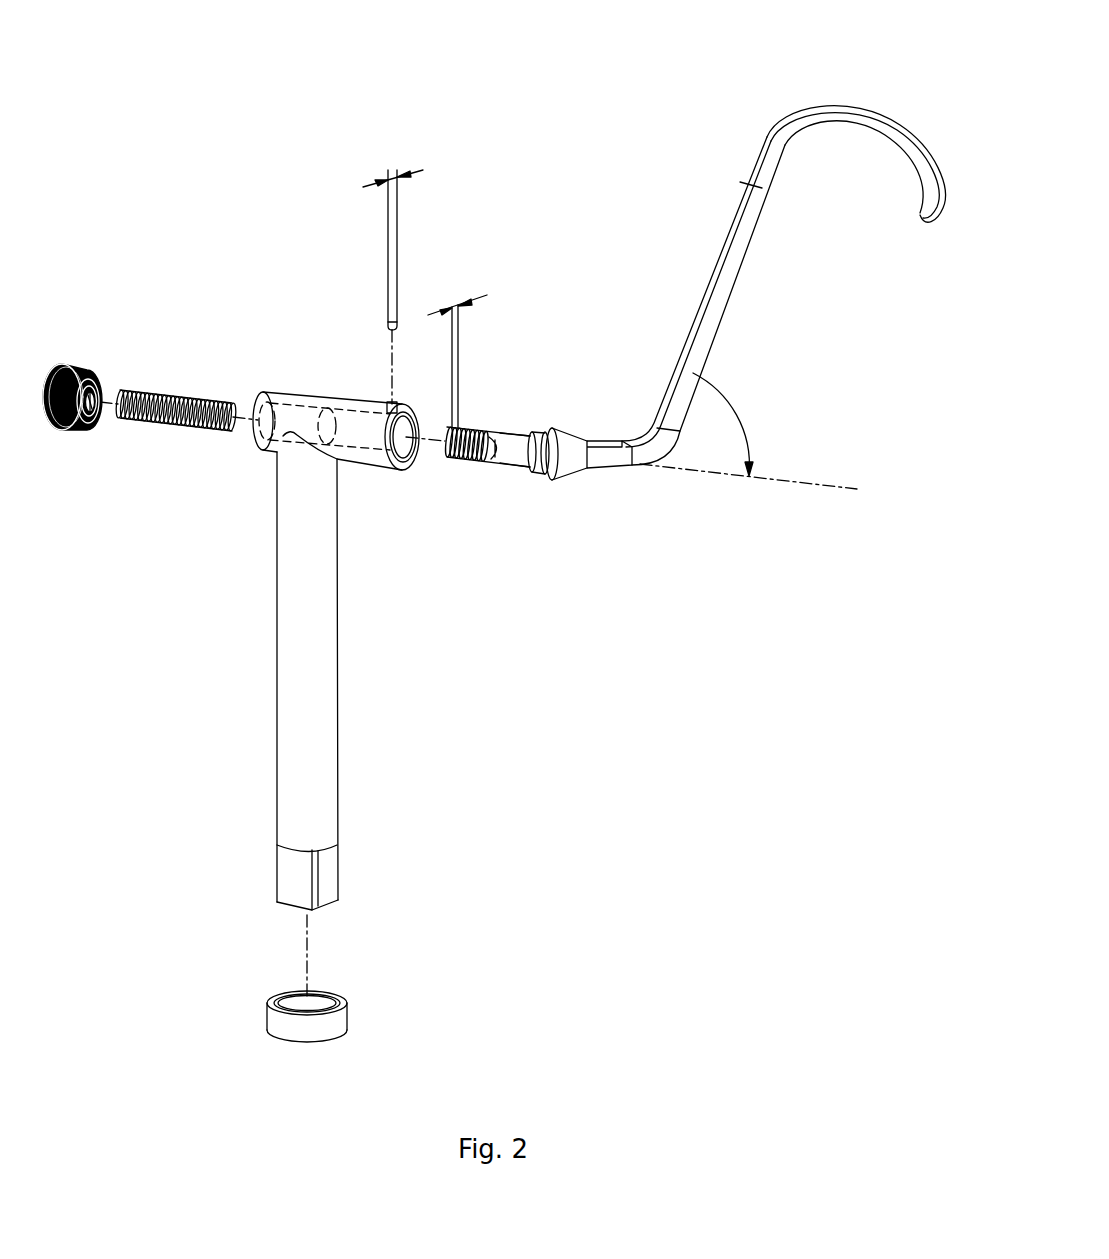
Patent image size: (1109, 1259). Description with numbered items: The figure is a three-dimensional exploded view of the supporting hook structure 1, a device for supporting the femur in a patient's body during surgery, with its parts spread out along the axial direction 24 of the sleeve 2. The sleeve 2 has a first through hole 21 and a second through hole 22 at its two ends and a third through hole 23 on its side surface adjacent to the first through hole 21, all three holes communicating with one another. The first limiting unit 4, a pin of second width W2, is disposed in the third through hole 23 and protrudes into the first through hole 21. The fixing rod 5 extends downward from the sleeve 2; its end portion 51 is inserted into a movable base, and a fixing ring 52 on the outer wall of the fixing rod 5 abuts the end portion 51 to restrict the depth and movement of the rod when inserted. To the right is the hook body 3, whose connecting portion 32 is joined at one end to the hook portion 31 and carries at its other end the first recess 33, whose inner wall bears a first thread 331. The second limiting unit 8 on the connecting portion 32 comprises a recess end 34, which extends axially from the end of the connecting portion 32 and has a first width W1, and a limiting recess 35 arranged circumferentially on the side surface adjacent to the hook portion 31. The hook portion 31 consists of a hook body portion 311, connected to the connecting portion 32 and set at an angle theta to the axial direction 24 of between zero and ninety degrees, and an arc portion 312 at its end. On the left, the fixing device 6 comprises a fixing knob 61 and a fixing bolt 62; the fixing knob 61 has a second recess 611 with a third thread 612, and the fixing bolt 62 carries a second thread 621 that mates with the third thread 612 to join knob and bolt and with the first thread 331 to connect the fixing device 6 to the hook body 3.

The supporting hook structure 1 is at (150, 88).
The sleeve 2 is at (316, 410).
The hook body 3 is at (627, 238).
The first limiting unit 4 is at (396, 322).
The fixing rod 5 is at (322, 583).
The fixing device 6 is at (87, 223).
The second limiting unit 8 is at (643, 322).
The first through hole 21 is at (405, 453).
The second through hole 22 is at (272, 406).
The third through hole 23 is at (393, 404).
The axial direction 24 is at (427, 443).
The hook portion 31 is at (898, 263).
The connecting portion 32 is at (515, 462).
The first recess 33 is at (462, 428).
The recess end 34 is at (493, 426).
The limiting recess 35 is at (542, 428).
The end portion 51 is at (327, 872).
The fixing ring 52 is at (340, 1023).
The fixing knob 61 is at (65, 368).
The fixing bolt 62 is at (132, 390).
The hook body portion 311 is at (727, 270).
The arc portion 312 is at (810, 137).
The first thread 331 is at (467, 462).
The second recess 611 is at (87, 428).
The third thread 612 is at (102, 418).
The second thread 621 is at (210, 428).
The first width W1 is at (463, 349).
The second width W2 is at (382, 168).